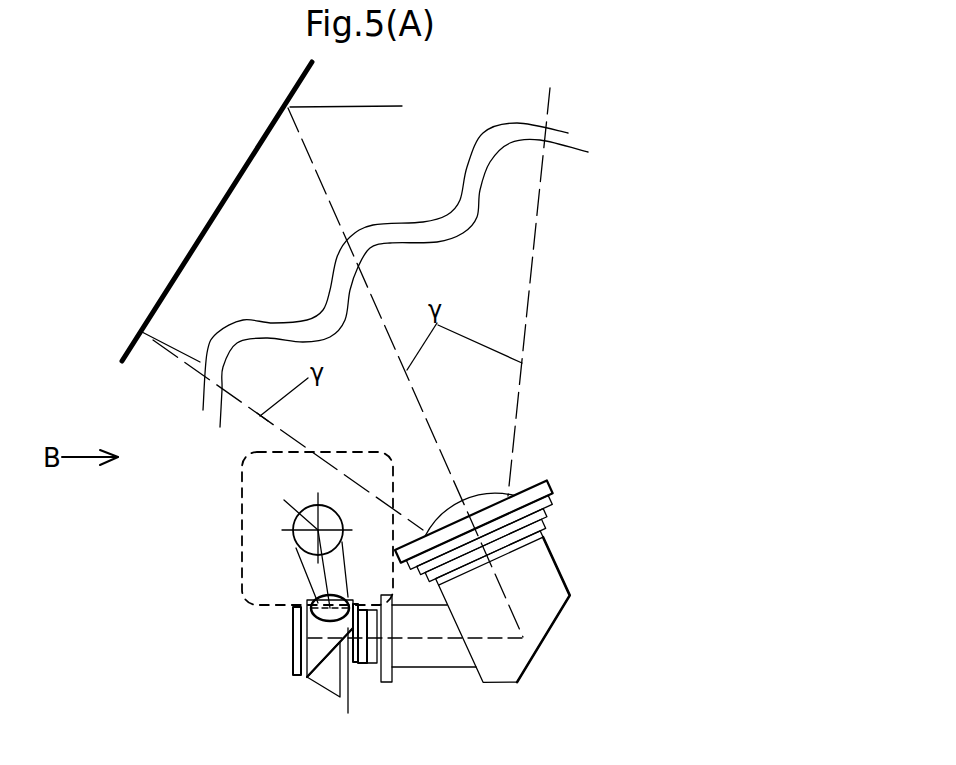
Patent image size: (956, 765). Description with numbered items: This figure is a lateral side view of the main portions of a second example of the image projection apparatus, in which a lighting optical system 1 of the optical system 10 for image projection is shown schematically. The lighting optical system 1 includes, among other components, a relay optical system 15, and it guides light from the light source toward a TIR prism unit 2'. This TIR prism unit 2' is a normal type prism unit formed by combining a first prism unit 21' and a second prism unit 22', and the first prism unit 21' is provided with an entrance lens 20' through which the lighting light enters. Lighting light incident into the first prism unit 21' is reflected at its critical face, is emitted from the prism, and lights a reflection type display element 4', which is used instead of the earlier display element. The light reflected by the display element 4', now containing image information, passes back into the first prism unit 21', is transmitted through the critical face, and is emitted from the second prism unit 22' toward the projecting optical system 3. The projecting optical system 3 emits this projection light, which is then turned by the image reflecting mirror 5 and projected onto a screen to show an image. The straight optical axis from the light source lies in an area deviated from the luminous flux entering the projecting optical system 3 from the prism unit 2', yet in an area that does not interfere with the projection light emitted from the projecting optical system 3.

The image reflecting mirror 5 is at (228, 188).
The lighting optical system 1 is at (240, 527).
The relay optical system 15 is at (337, 517).
The entrance lens 20' is at (300, 591).
The first prism unit 21' is at (285, 650).
The second prism unit 22' is at (306, 698).
The TIR prism unit 2' is at (285, 690).
The reflection type display element 4' is at (250, 641).
The projecting optical system 3 is at (552, 643).
The optical system for image projection 10 is at (593, 586).